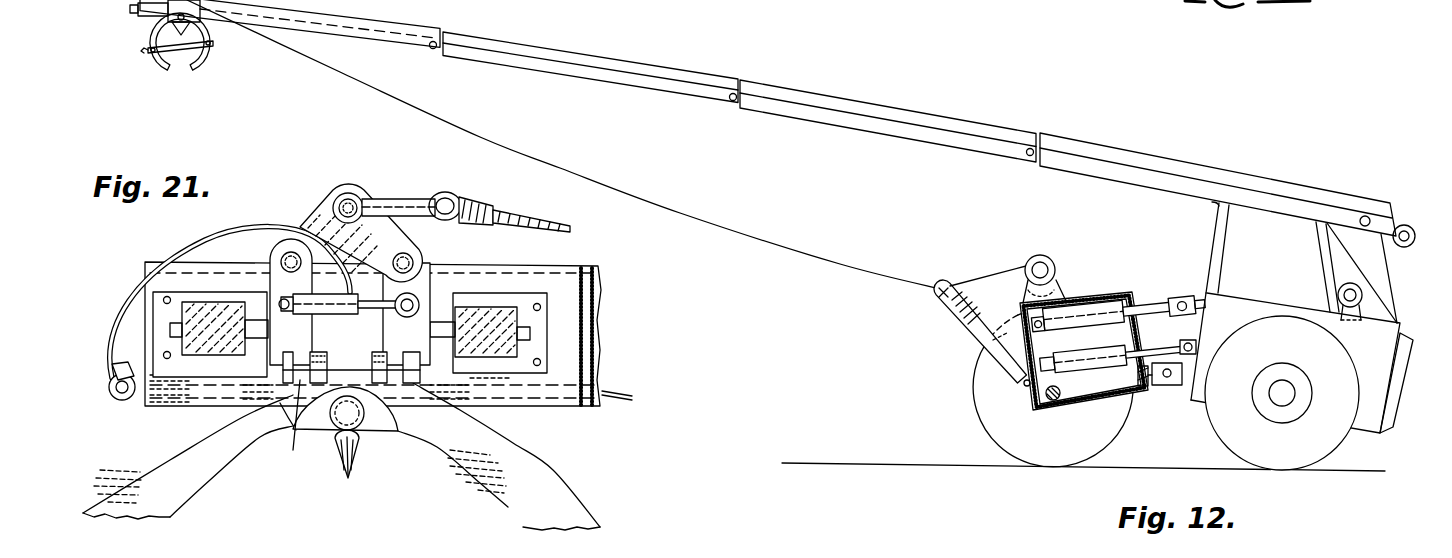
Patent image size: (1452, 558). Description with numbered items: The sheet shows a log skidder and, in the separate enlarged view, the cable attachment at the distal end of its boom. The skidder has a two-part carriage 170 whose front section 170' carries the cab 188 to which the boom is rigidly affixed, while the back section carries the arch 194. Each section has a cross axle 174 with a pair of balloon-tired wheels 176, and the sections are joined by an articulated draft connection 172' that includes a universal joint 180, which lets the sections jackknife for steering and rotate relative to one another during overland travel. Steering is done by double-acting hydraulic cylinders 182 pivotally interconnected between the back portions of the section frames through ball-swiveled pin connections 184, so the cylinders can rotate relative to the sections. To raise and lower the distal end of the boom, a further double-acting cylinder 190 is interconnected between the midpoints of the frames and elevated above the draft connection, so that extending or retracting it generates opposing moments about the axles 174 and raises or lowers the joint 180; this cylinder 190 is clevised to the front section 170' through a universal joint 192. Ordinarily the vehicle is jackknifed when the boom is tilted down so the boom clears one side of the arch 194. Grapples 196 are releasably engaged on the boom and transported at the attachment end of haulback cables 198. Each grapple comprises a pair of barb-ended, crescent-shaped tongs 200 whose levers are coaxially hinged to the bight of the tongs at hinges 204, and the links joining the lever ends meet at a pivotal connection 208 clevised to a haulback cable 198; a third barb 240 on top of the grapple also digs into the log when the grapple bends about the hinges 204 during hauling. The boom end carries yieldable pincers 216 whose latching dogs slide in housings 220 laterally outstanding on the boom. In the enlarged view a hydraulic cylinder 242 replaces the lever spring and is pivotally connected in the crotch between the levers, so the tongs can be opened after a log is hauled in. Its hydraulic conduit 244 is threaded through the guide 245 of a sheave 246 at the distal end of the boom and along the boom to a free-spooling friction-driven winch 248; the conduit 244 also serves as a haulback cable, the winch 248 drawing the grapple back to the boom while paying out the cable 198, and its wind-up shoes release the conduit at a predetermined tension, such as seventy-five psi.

In FIG. 12, the two-part carriage 170 is at (777, 123).
In FIG. 12, the front section of the carriage 170' is at (1302, 344).
In FIG. 12, the articulated draft connection 172' is at (1156, 410).
In FIG. 12, the cross axle 174 is at (1050, 395).
In FIG. 12, the balloon-tired wheels 176 is at (997, 437).
In FIG. 12, the universal joint 180 is at (1163, 383).
In FIG. 12, the double-acting hydraulic cylinders 182 is at (1103, 370).
In FIG. 12, the ball-swiveled pin connections 184 is at (1027, 383).
In FIG. 12, the cab 188 is at (1218, 235).
In FIG. 12, the third double-acting hydraulic cylinder 190 is at (1083, 312).
In FIG. 12, the universal joint 192 is at (1180, 302).
In FIG. 12, the arch 194 is at (963, 320).
In FIG. 12, the grapple 196 is at (224, 66).
In FIG. 12, the haulback cable 198 is at (703, 221).
In FIG. 21, the haulback cable 198 is at (533, 227).
In FIG. 21, the crescent shaped tongs 200 is at (138, 453).
In FIG. 21, the hinge 204 is at (291, 377).
In FIG. 21, the pivotal connection 208 is at (349, 194).
In FIG. 21, the yieldable pincers 216 is at (447, 257).
In FIG. 21, the housings 220 is at (197, 307).
In FIG. 21, the third barb 240 is at (353, 457).
In FIG. 21, the hydraulic cylinder 242 is at (338, 314).
In FIG. 21, the hydraulic conduit 244 is at (130, 307).
In FIG. 21, the guide 245 is at (113, 352).
In FIG. 21, the sheave 246 is at (113, 413).
In FIG. 12, the free-spooling friction driven winch 248 is at (1373, 302).